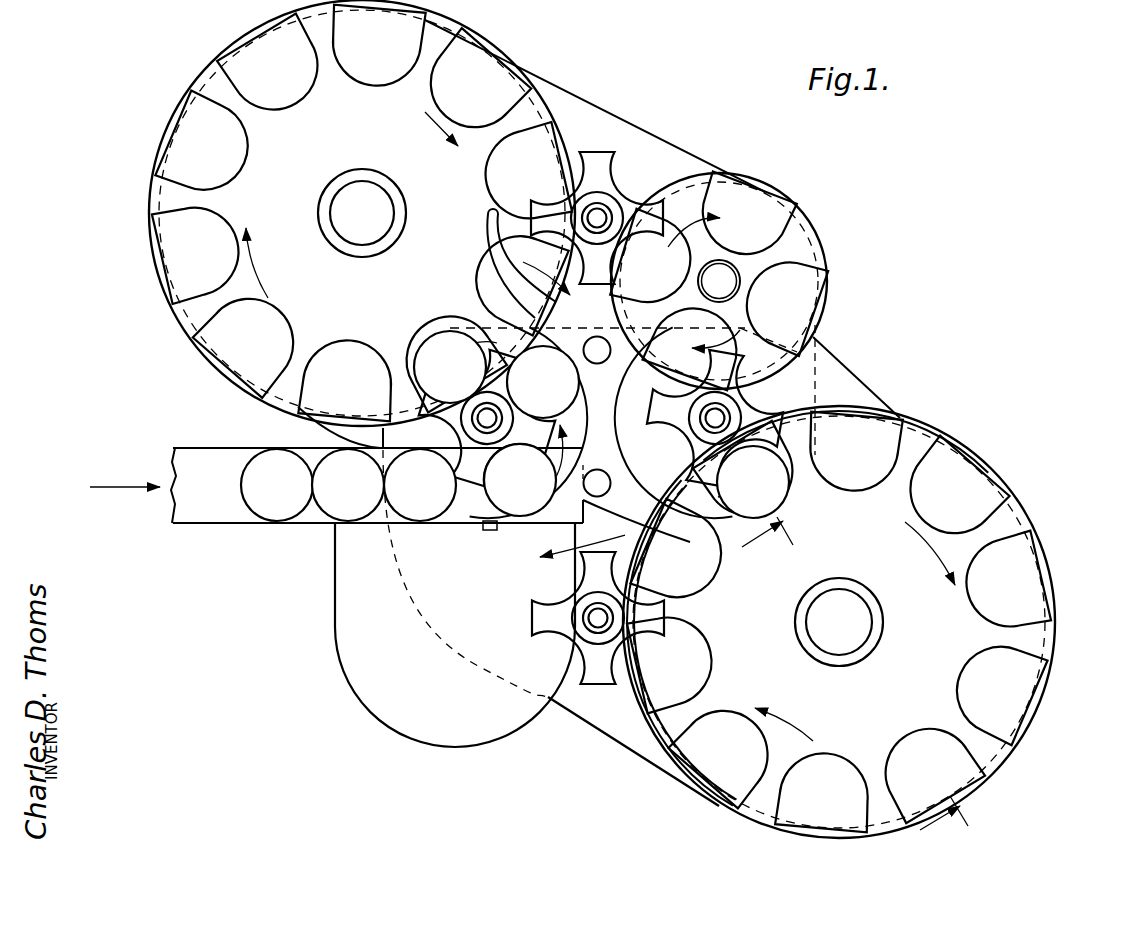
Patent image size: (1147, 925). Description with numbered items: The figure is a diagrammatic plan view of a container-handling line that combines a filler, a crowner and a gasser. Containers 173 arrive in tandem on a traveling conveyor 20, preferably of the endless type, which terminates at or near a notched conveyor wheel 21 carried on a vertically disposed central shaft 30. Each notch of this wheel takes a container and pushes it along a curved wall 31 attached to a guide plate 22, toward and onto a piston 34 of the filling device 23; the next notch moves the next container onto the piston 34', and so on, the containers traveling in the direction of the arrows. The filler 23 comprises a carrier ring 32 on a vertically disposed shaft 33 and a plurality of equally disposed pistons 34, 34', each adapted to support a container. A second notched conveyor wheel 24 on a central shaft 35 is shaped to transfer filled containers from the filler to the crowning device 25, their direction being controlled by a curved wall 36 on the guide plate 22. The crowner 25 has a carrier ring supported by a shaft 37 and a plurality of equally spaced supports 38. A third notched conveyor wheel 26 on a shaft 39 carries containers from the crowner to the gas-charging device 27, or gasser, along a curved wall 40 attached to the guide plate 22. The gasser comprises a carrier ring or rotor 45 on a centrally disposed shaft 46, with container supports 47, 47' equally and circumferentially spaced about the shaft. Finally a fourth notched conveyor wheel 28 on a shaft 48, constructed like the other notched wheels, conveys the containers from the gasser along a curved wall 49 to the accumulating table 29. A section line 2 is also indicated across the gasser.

The section line 2- 2 is at (855, 678).
The traveling conveyor 20 is at (232, 505).
The notched conveyor wheel 21 is at (472, 487).
The guide plate 22 is at (508, 297).
The filling device 23 is at (140, 188).
The second notched conveyor wheel 24 is at (615, 183).
The crowning device 25 is at (842, 252).
The third notched conveyor wheel 26 is at (755, 420).
The gas-charging device 27 is at (1022, 502).
The fourth notched conveyor wheel 28 is at (612, 685).
The accumulating table 29 is at (495, 718).
The central shaft 30 is at (487, 418).
The curved wall 31 is at (500, 527).
The carrier ring 32 is at (180, 332).
The shaft 33 is at (362, 232).
The piston 34 is at (403, 316).
The piston 34' is at (454, 256).
The central shaft 35 is at (597, 213).
The curved wall 36 is at (490, 222).
The shaft 37 is at (722, 270).
The supports 38 is at (800, 290).
The shaft 39 is at (714, 418).
The curved wall 40 is at (612, 358).
The carrier ring or rotor 45 is at (1058, 630).
The shaft 46 is at (851, 642).
The container support 47 is at (771, 486).
The container support 47' is at (929, 410).
The shaft 48 is at (598, 620).
The curved wall 49 is at (615, 528).
The containers 173 is at (410, 426).